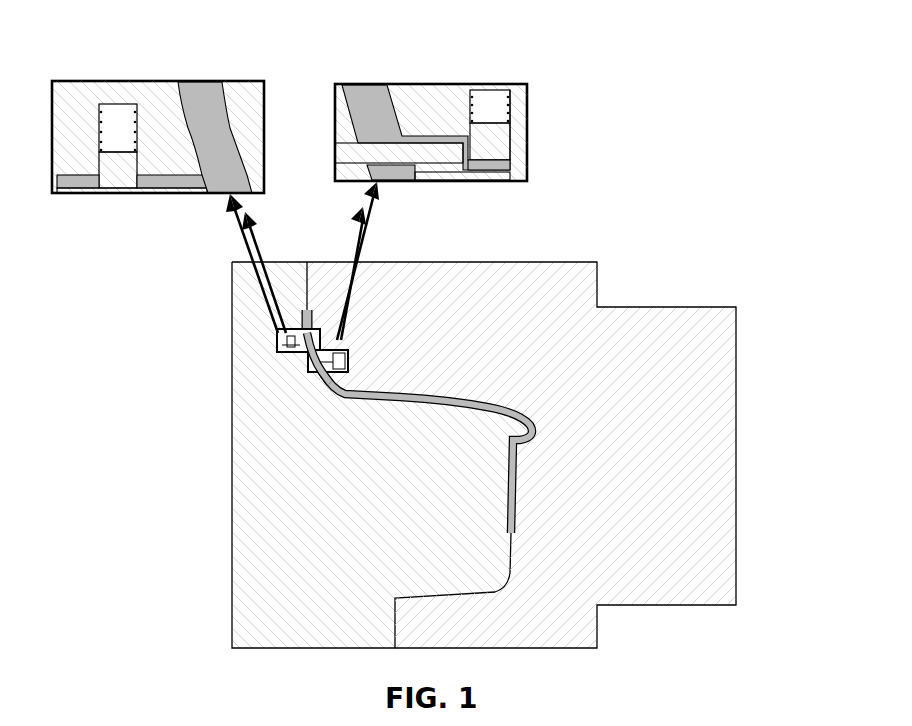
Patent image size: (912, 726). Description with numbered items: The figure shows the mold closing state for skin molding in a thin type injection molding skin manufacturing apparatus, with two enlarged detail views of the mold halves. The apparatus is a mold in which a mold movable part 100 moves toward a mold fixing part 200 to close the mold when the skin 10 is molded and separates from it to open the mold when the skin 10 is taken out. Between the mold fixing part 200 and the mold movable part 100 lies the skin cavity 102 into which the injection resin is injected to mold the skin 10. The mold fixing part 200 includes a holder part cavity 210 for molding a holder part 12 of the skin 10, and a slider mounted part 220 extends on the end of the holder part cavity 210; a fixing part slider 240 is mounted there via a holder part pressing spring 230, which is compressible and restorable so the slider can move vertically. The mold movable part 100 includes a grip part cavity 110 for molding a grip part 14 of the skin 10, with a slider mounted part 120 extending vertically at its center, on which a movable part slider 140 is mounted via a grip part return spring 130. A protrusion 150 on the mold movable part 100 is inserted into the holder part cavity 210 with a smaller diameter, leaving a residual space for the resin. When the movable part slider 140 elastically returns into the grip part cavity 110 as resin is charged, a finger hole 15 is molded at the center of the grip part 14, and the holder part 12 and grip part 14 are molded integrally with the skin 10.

The skin 10 is at (233, 125).
The holder part 12 is at (507, 165).
The grip part 14 is at (70, 183).
The finger hole 15 is at (107, 177).
The mold movable part 100 is at (242, 498).
The skin cavity 102 is at (205, 105).
The grip part cavity 110 is at (168, 183).
The slider mounted part 120 is at (112, 107).
The grip part return spring 130 is at (128, 110).
The movable part slider 140 is at (127, 177).
The protrusion 150 is at (427, 160).
The mold fixing part 200 is at (725, 423).
The holder part cavity 210 is at (443, 147).
The slider mounted part 220 is at (483, 97).
The holder part pressing spring 230 is at (513, 98).
The fixing part slider 240 is at (502, 145).